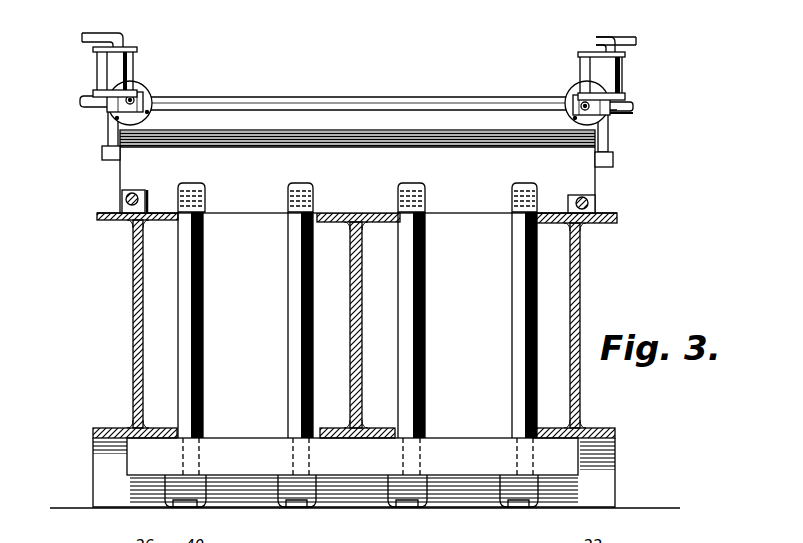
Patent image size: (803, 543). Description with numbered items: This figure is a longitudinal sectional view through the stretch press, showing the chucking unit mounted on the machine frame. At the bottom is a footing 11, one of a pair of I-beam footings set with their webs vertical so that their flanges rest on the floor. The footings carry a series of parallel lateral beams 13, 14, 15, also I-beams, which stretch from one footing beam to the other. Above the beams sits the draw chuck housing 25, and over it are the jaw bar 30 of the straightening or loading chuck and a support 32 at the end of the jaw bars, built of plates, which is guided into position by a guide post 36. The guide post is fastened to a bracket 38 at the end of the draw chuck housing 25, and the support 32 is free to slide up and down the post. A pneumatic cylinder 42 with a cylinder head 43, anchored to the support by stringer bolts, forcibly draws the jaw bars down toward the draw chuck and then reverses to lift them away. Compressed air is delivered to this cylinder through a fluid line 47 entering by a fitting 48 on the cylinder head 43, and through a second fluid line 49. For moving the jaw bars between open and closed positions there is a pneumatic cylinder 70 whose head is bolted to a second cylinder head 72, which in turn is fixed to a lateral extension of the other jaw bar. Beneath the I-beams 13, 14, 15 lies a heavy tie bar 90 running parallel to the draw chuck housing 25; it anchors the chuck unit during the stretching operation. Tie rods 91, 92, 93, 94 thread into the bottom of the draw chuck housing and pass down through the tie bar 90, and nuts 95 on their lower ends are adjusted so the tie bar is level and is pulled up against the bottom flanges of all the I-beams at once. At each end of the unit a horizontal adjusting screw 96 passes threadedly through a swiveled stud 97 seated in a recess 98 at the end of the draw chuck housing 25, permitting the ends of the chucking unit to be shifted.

The footing 11 is at (93, 458).
The lateral beam 13 is at (133, 347).
The lateral beam 14 is at (365, 370).
The lateral beam 15 is at (581, 290).
The draw chuck housing 25 is at (385, 160).
The jaw bar 30 is at (350, 98).
The support 32 is at (617, 114).
The guide post 36 is at (108, 136).
The bracket 38 is at (102, 156).
The pneumatic cylinder 42 is at (139, 66).
The cylinder head 43 is at (95, 52).
The fluid line 47 is at (82, 37).
The fitting 48 is at (118, 40).
The fluid line 49 is at (80, 100).
The pneumatic cylinder 70 is at (151, 93).
The second cylinder head 72 is at (160, 113).
The tie bar 90 is at (241, 443).
The tie rod 91 is at (513, 326).
The tie rod 92 is at (425, 283).
The tie rod 93 is at (292, 329).
The tie rod 94 is at (203, 295).
The nut 95 is at (165, 486).
The horizontal adjusting screw 96 is at (133, 192).
The swiveled stud 97 is at (120, 202).
The recess 98 is at (190, 190).